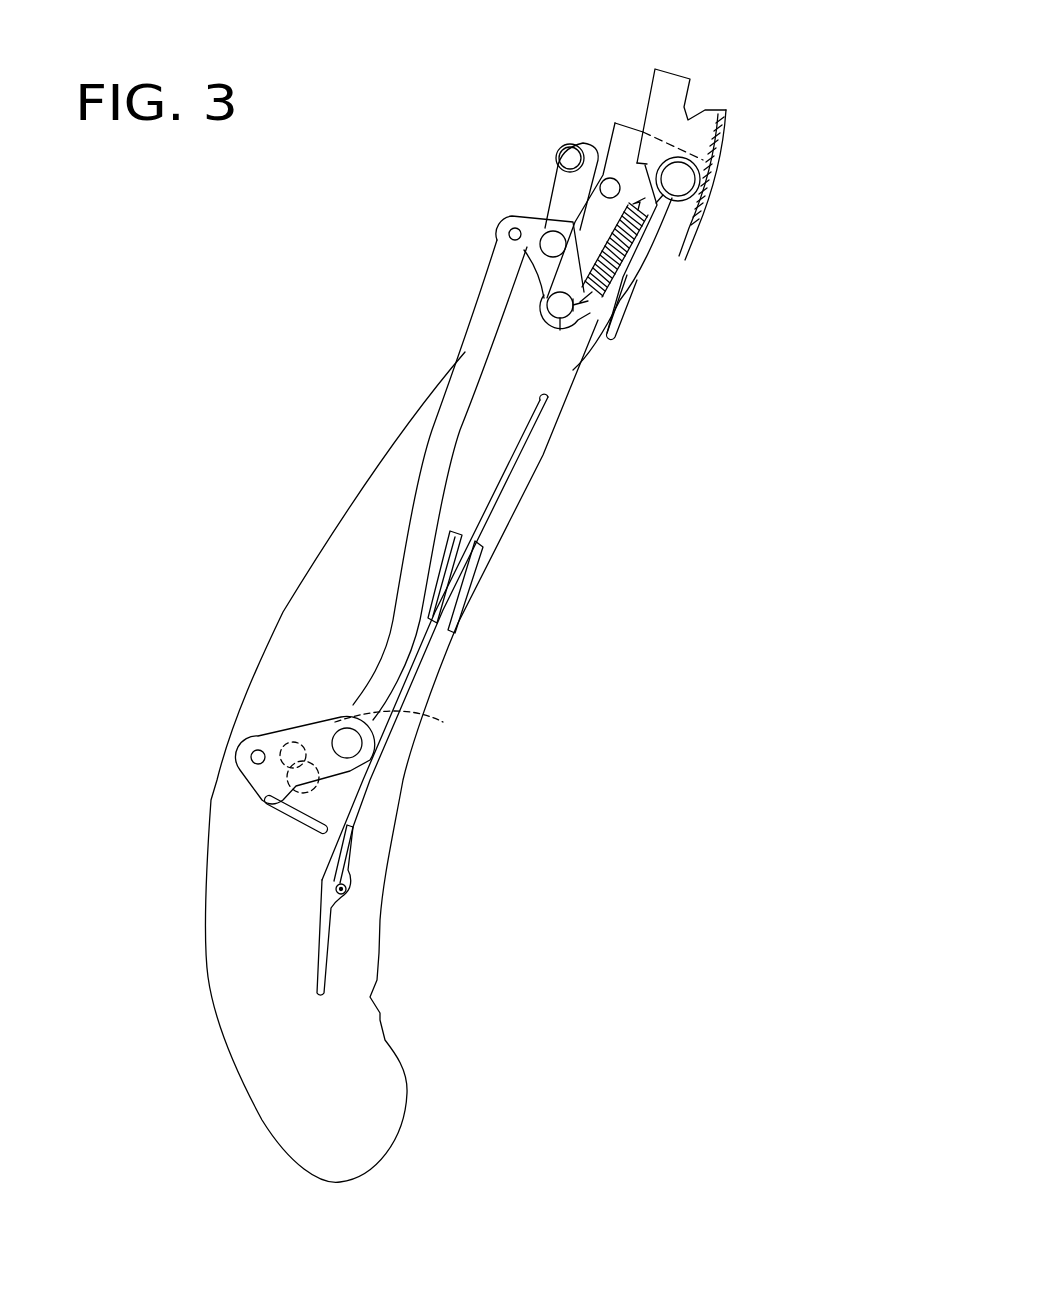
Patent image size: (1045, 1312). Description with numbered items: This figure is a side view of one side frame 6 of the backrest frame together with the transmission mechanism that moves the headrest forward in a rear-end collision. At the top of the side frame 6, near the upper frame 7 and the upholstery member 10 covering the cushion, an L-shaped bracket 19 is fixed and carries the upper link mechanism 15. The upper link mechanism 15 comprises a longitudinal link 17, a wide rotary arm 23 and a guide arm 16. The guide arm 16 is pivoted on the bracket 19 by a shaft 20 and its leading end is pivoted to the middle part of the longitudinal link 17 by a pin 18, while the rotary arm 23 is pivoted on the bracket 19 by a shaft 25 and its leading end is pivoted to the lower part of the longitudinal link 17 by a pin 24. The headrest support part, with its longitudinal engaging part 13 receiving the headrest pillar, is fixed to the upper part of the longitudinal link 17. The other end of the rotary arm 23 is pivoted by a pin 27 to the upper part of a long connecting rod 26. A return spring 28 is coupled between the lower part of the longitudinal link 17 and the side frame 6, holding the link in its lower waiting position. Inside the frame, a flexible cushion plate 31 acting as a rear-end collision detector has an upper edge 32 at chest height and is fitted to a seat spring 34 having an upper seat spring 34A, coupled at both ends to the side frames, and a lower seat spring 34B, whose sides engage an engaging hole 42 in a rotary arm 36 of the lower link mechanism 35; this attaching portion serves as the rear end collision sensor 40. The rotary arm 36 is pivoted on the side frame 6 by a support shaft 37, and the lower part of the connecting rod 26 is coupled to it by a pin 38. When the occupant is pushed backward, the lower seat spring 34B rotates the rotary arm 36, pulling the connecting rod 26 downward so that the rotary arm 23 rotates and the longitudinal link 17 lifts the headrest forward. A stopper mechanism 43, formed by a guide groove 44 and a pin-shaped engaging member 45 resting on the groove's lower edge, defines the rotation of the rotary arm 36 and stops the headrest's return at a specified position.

The side frame 6 is at (318, 545).
The upper frame 7 is at (727, 133).
The upholstery member 10 is at (700, 203).
The longitudinal engaging part 13 is at (682, 88).
The upper link mechanism 15 is at (506, 164).
The guide arm 16 is at (602, 128).
The longitudinal link 17 is at (565, 188).
The pin 18 is at (616, 122).
The L-shaped bracket 19 is at (558, 182).
The shaft 20 is at (564, 152).
The rotary arm 23 is at (505, 221).
The pin 24 is at (561, 318).
The shaft 25 is at (548, 255).
The connecting rod 26 is at (433, 470).
The pin 27 is at (509, 236).
The return spring 28 is at (647, 240).
The cushion plate 31 is at (527, 442).
The upper edge 32 is at (541, 398).
The seat spring 34 is at (485, 707).
The upper seat spring 34A is at (473, 568).
The lower seat spring 34B is at (355, 855).
The lower link mechanism 35 is at (251, 837).
The rotary arm 36 is at (268, 736).
The support shaft 37 is at (352, 743).
The pin 38 is at (253, 757).
The rear end collision sensor 40 is at (315, 868).
The engaging hole 42 is at (348, 890).
The stopper mechanism 43 is at (317, 777).
The guide groove 44 is at (290, 745).
The engaging member 45 is at (265, 792).